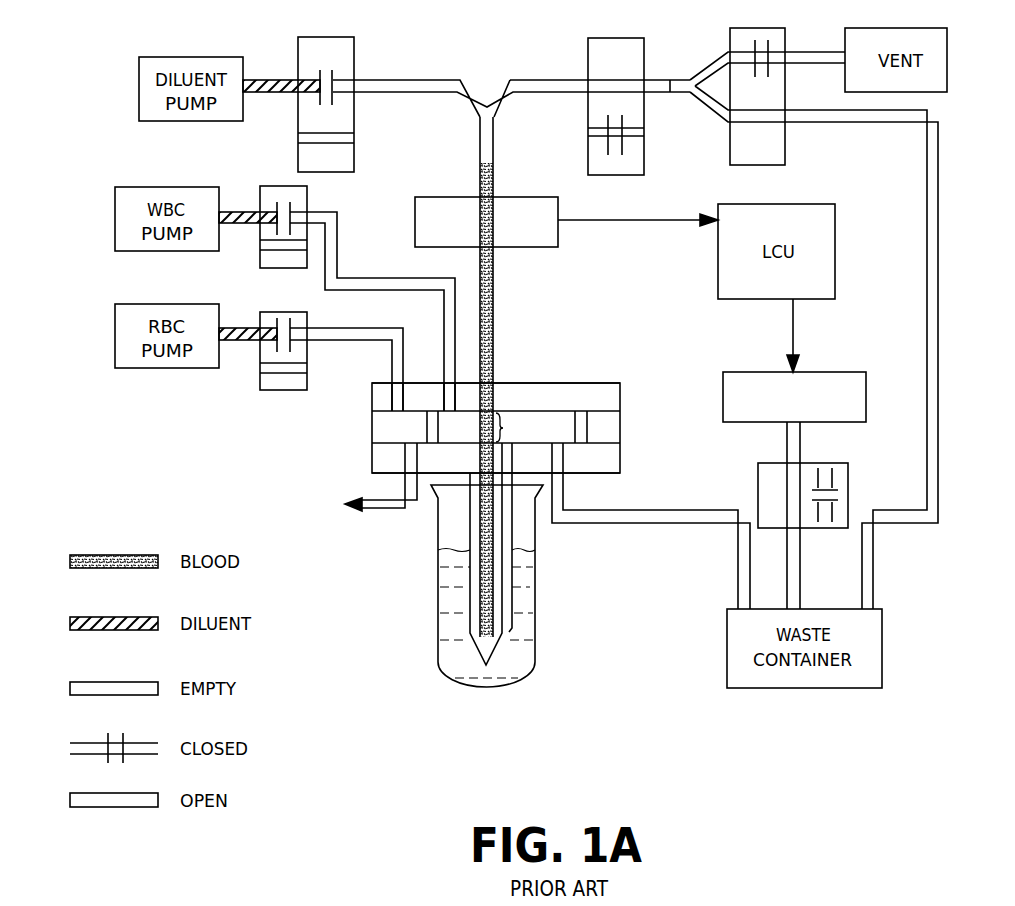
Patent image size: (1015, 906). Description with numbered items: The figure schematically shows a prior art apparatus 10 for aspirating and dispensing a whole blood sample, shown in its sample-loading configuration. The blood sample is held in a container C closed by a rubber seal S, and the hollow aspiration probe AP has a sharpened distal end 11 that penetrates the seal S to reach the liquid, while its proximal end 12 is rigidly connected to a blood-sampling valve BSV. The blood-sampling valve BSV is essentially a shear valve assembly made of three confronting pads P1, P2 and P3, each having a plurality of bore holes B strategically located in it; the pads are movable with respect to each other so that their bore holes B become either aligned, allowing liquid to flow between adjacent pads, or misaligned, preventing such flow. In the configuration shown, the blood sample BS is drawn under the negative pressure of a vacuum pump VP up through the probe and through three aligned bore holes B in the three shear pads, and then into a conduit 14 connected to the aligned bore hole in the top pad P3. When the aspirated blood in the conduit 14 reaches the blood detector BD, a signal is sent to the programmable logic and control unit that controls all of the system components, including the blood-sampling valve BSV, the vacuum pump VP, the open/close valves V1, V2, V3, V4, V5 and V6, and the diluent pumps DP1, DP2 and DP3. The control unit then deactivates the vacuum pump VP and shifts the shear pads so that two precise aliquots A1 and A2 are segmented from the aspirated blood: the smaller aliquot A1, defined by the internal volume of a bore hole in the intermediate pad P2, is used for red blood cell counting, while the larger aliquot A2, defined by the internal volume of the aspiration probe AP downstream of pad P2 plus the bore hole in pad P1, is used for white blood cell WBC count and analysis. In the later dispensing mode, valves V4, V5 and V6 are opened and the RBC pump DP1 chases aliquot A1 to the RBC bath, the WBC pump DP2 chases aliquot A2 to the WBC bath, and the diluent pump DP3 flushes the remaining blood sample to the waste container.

The apparatus 10 is at (585, 338).
The sharpened distal end 11 is at (458, 636).
The proximal end 12 is at (432, 483).
The conduit 14 is at (494, 352).
The RBC pump DP1 is at (99, 337).
The WBC pump DP2 is at (99, 219).
The diluent pump DP3 is at (123, 89).
The open/close valve V1 is at (830, 457).
The open/close valve V2 is at (803, 157).
The open/close valve V3 is at (661, 151).
The open/close valve V4 is at (370, 57).
The open/close valve V5 is at (323, 201).
The open/close valve V6 is at (323, 321).
The blood detector BD is at (527, 197).
The blood sample BS is at (494, 325).
The blood-sampling valve BSV is at (466, 425).
The shear pad P1 is at (622, 462).
The intermediate pad P2 is at (622, 432).
The top pad P3 is at (622, 385).
The bore holes B is at (560, 460).
The aliquot A1 is at (514, 427).
The aliquot A2 is at (512, 540).
The rubber seal S is at (455, 488).
The aspiration probe AP is at (438, 562).
The container C is at (501, 586).
The white blood cell sample WBC is at (505, 635).
The vacuum pump VP is at (820, 372).